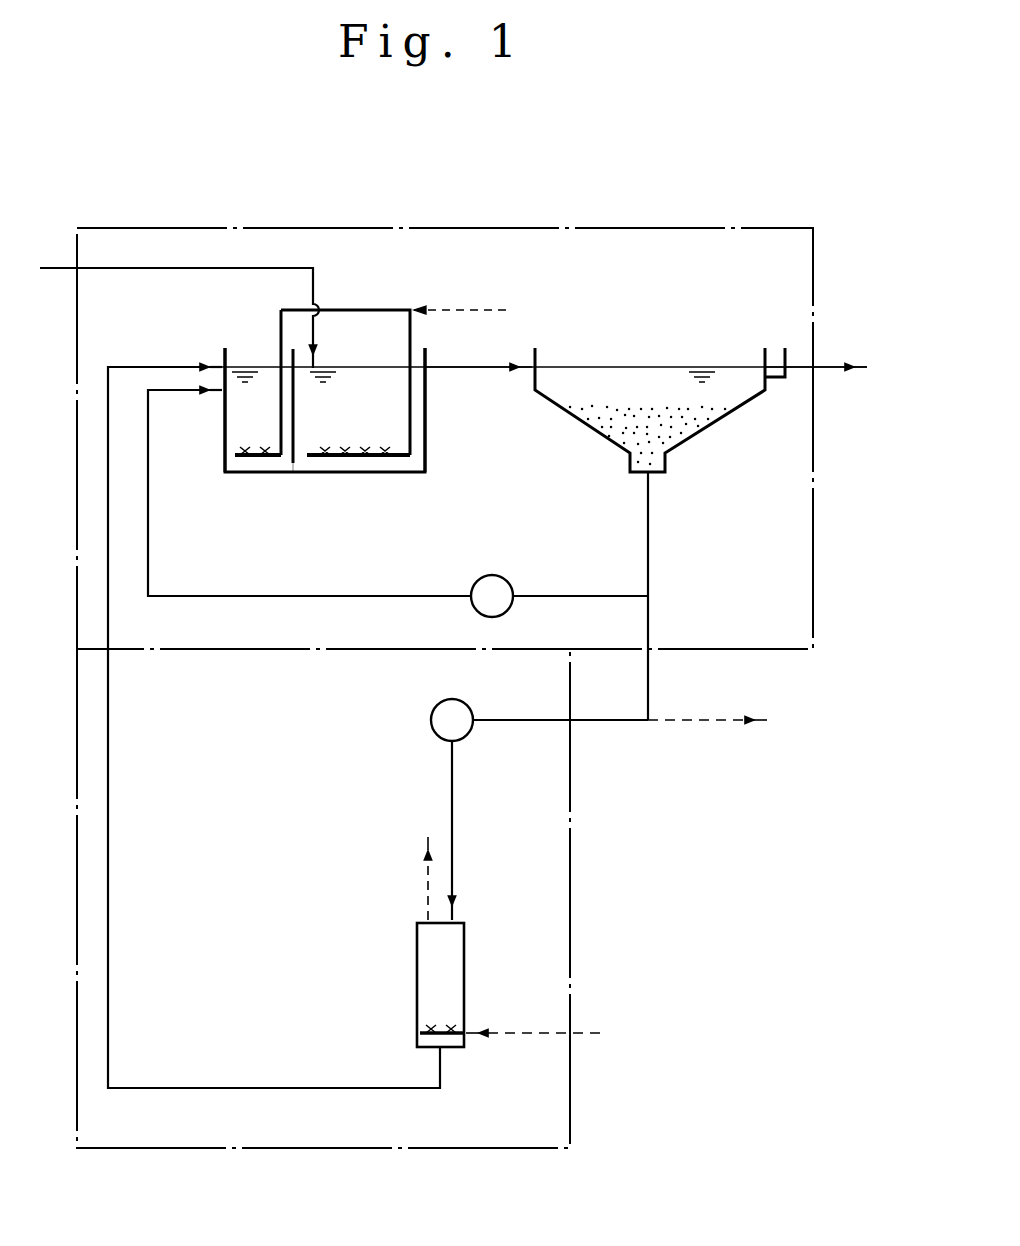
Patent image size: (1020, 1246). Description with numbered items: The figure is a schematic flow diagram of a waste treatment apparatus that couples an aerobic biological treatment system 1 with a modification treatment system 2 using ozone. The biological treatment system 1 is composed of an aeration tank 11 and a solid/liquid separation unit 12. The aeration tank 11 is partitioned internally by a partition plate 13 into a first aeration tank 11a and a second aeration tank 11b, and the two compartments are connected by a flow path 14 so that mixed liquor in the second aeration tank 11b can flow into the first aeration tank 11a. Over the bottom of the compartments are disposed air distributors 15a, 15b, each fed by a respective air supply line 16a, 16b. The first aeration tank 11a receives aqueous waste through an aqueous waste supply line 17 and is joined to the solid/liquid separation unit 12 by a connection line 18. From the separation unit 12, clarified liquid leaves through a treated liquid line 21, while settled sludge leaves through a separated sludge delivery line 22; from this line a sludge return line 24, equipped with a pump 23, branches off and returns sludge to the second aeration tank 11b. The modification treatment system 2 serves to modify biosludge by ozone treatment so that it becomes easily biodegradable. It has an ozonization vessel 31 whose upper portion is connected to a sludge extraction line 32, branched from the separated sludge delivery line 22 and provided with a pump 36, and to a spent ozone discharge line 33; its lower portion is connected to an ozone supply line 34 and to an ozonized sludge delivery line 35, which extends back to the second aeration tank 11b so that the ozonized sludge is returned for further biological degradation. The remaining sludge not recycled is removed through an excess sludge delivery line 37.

The aerobic biological treatment system 1 is at (500, 228).
The modification treatment system 2 is at (570, 890).
The aeration tank 11 is at (315, 472).
The first aeration tank 11a is at (367, 363).
The second aeration tank 11b is at (250, 364).
The solid/liquid separation unit 12 is at (700, 430).
The partition plate 13 is at (293, 400).
The flow path 14 is at (296, 466).
The air distributor 15a is at (358, 465).
The air distributor 15b is at (246, 466).
The air supply line 16a is at (410, 425).
The air supply line 16b is at (281, 418).
The aqueous waste supply line 17 is at (198, 268).
The connection line 18 is at (503, 368).
The treated liquid line 21 is at (832, 367).
The separated sludge delivery line 22 is at (648, 533).
The pump 23 is at (500, 578).
The sludge return line 24 is at (148, 573).
The ozonization vessel 31 is at (464, 971).
The sludge extraction line 32 is at (452, 794).
The spent ozone discharge line 33 is at (428, 876).
The ozone supply line 34 is at (504, 1036).
The ozonized sludge delivery line 35 is at (242, 1088).
The pump 36 is at (431, 720).
The excess sludge delivery line 37 is at (701, 722).